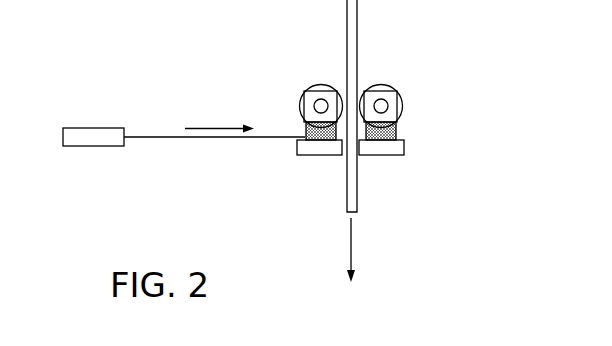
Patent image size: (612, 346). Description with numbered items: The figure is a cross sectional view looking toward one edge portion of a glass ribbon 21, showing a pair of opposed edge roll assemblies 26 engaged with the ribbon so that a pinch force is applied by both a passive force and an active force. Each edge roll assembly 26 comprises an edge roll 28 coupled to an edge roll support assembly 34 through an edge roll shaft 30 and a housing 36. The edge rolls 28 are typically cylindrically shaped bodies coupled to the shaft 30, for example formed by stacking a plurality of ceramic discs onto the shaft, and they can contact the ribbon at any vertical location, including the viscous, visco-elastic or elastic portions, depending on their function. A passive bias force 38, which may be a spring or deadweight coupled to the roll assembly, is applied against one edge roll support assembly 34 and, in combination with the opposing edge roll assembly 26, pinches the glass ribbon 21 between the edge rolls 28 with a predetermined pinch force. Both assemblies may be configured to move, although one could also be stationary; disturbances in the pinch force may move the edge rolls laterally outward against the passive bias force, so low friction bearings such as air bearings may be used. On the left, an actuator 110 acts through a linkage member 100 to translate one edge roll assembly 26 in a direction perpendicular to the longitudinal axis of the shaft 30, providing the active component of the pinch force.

The strip / web 21 is at (351, 247).
The edge roll assembly 26 is at (359, 125).
The edge roll 28 is at (325, 85).
The edge roll shaft 30 is at (318, 105).
The edge roll support assembly 34 is at (303, 130).
The housing 36 is at (392, 117).
The bias force 38 is at (193, 127).
The linkage member 100 is at (159, 138).
The terminal / connector 110 is at (99, 127).